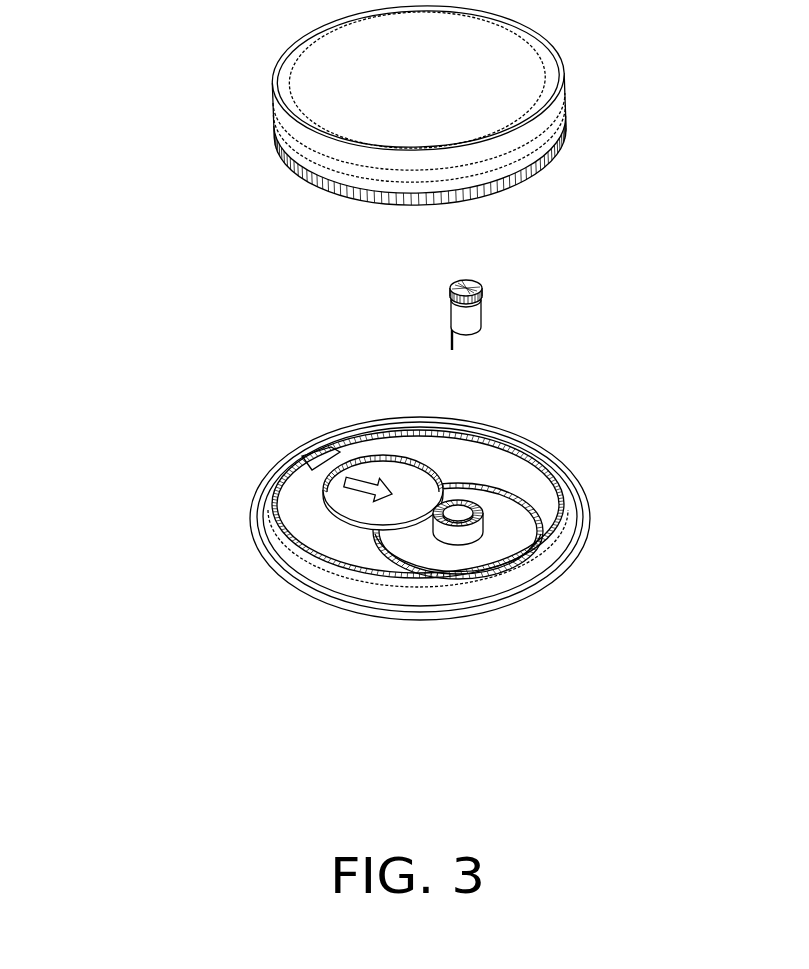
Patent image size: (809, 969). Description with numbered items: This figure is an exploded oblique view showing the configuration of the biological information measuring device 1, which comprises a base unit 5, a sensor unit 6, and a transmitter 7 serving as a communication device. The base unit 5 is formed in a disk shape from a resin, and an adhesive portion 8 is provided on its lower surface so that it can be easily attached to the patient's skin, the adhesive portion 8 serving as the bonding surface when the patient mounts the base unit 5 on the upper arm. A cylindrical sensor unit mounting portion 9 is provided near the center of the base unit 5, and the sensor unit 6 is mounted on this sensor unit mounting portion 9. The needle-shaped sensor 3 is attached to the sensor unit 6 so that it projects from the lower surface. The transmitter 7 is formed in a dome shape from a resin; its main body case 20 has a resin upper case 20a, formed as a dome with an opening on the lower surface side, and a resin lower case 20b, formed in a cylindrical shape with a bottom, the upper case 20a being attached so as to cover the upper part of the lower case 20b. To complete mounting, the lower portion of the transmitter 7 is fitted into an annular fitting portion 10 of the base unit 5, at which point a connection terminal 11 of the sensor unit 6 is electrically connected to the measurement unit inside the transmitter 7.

The biological information measuring device 1 is at (424, 383).
The sensor 3 is at (448, 345).
The base unit 5 is at (466, 591).
The sensor unit 6 is at (484, 302).
The transmitter 7 is at (387, 108).
The adhesive portion 8 is at (505, 605).
The sensor unit mounting portion 9 is at (452, 536).
The annular fitting portion 10 is at (308, 560).
The connection terminal 11 is at (481, 283).
The main body case 20 is at (316, 108).
The upper case 20a is at (274, 95).
The lower case 20b is at (279, 147).